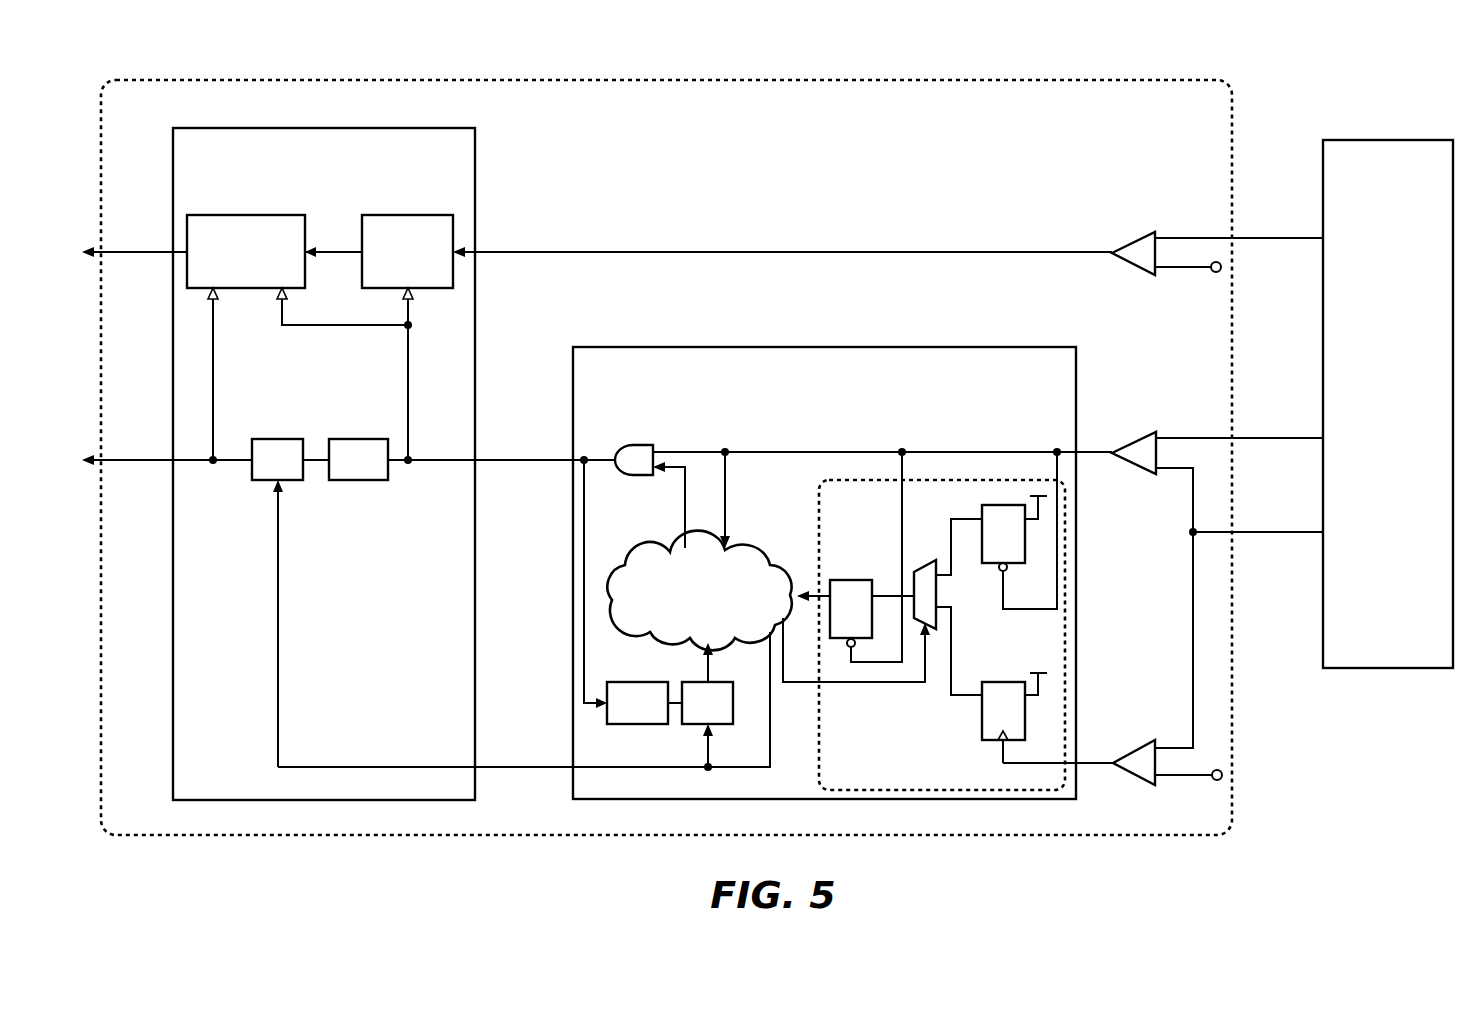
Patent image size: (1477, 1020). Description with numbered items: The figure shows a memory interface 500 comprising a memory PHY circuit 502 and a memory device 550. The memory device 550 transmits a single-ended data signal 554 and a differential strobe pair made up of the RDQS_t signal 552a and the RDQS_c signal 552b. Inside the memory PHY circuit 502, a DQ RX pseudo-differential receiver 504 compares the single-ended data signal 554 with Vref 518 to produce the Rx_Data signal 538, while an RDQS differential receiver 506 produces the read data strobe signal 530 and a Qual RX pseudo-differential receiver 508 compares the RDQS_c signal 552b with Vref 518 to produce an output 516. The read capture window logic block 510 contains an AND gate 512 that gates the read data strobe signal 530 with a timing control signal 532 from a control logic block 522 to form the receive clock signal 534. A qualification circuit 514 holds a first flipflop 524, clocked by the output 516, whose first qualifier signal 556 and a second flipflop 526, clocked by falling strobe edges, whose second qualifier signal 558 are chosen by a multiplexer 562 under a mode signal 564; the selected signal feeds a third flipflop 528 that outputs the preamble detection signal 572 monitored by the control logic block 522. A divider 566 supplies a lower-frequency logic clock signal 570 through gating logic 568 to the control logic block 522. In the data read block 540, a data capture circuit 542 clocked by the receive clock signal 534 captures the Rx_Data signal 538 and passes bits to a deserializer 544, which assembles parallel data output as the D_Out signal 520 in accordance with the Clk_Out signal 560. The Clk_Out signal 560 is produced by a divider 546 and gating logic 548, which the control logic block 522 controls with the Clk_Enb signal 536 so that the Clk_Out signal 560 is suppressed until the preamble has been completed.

The memory interface 500 is at (176, 51).
The memory PHY circuit 502 is at (666, 457).
The DQ RX pseudo-differential receiver 504 is at (1147, 232).
The RDQS differential receiver 506 is at (1147, 432).
The Qual RX pseudo-differential receiver 508 is at (1150, 740).
The read capture window logic block 510 is at (824, 573).
The AND gate 512 is at (636, 445).
The qualification circuit 514 is at (818, 516).
The output of Qual RX pseudo-differential receiver 516 is at (1053, 764).
The reference voltage Vref 518 is at (1188, 523).
The data output DOut 520 is at (134, 254).
The control logic block 522 is at (699, 591).
The first flipflop 524 is at (985, 740).
The second flipflop 526 is at (1006, 505).
The third flipflop 528 is at (842, 580).
The read data strobe signal 530 is at (792, 472).
The timing control signal 532 is at (685, 531).
The receive clock signal 534 is at (548, 573).
The Clk_Enb signal 536 is at (524, 713).
The Rx_Data signal 538 is at (782, 254).
The data read block 540 is at (324, 464).
The data capture circuit 542 is at (409, 215).
The deserializer 544 is at (233, 215).
The divider 546 is at (367, 480).
The gating logic 548 is at (293, 439).
The memory device 550 is at (1388, 404).
The RDQS_t signal 552a is at (1239, 441).
The RDQS_c signal 552b is at (1258, 535).
The single-ended data signal 554 is at (1293, 238).
The first qualifier signal 556 is at (965, 696).
The second qualifier signal 558 is at (968, 518).
The Clk_Out signal 560 is at (167, 393).
The multiplexer 562 is at (938, 592).
The mode signal 564 is at (900, 682).
The divider 566 is at (635, 724).
The gating logic 568 is at (690, 682).
The logic clock signal 570 is at (712, 668).
The preamble detection signal 572 is at (815, 590).